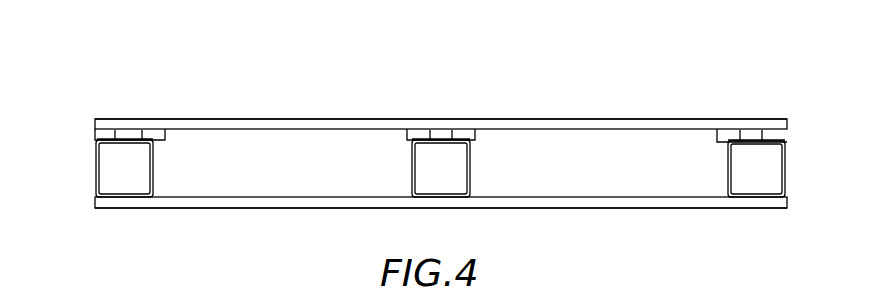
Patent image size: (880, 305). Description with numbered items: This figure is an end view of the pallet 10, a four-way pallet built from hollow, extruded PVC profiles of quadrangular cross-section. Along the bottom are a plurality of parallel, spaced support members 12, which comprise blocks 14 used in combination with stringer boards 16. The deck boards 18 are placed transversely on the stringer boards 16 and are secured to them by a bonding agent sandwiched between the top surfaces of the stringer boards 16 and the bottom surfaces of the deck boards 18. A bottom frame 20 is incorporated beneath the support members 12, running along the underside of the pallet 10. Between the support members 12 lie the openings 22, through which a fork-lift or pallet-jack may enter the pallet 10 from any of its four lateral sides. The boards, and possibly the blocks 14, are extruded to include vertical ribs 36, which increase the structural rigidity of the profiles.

The pallet 10 is at (800, 96).
The support members 12 is at (789, 131).
The blocks 14 is at (95, 162).
The stringer boards 16 is at (95, 134).
The deck boards 18 is at (435, 119).
The bottom frame 20 is at (118, 208).
The openings 22 is at (290, 175).
The vertical ribs 36 is at (453, 134).